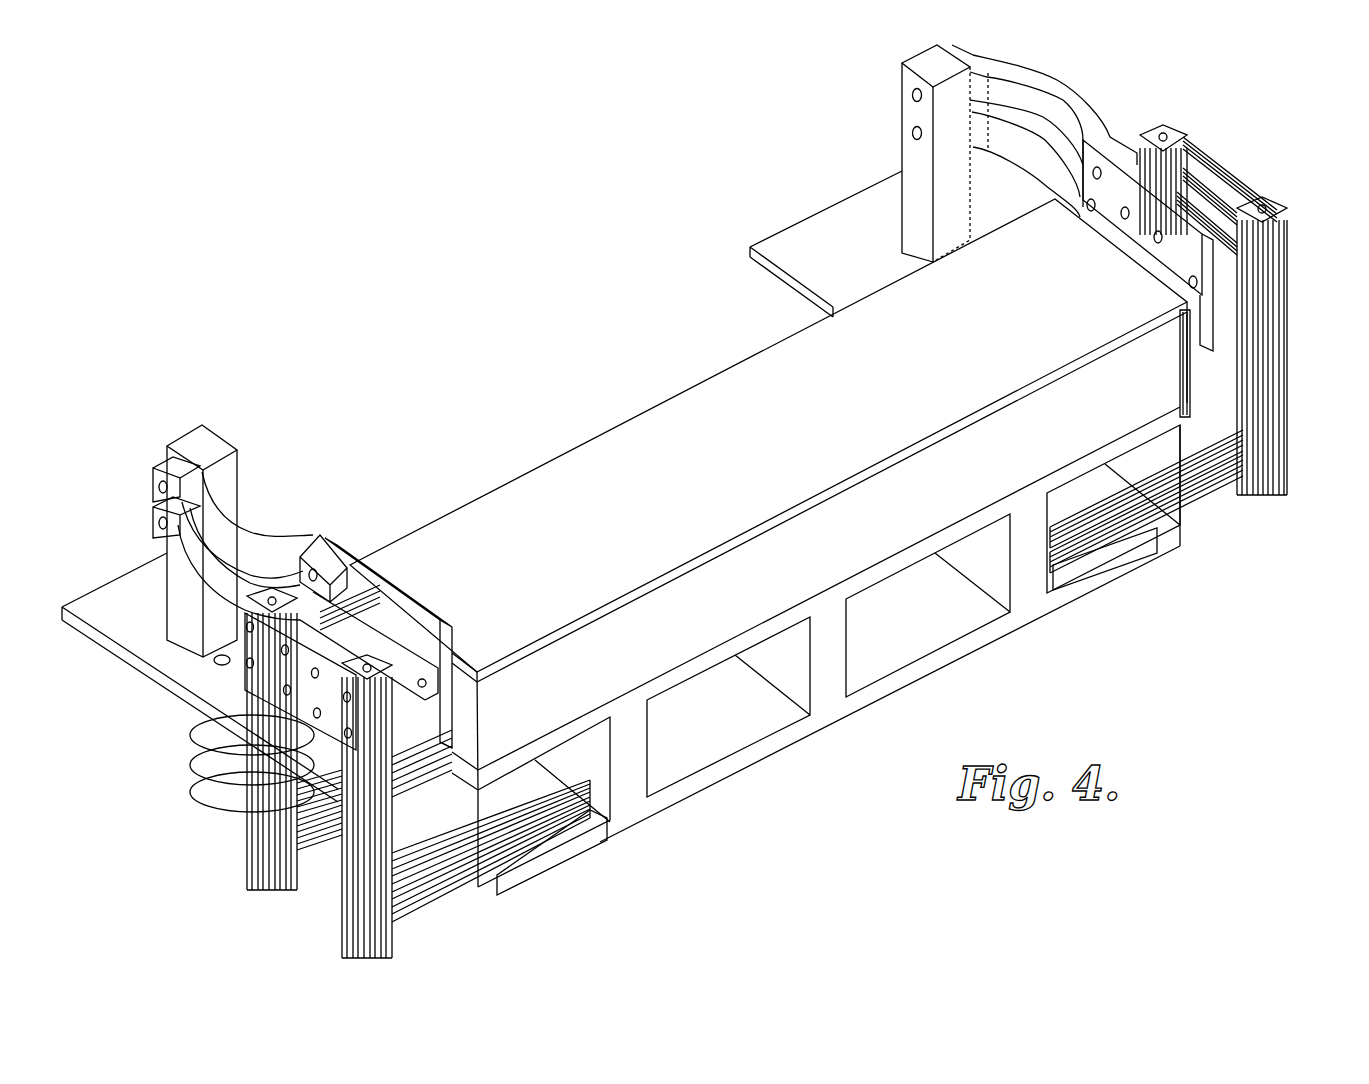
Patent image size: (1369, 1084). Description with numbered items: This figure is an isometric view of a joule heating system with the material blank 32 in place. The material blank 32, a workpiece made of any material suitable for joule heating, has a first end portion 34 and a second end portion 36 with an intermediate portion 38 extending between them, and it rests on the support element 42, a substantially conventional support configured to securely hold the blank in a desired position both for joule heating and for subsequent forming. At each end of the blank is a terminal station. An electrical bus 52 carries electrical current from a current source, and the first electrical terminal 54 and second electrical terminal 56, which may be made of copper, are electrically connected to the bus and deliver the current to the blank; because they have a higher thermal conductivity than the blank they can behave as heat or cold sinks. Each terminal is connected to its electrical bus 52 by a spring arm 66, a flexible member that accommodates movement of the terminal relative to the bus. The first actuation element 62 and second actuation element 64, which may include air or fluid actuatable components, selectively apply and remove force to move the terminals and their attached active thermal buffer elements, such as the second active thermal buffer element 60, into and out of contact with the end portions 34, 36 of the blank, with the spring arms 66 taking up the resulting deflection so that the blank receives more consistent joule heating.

The material blank 32 is at (811, 439).
The first end portion 34 is at (424, 583).
The second end portion 36 is at (1142, 315).
The intermediate portion 38 is at (624, 418).
The support element 42 is at (841, 562).
The electrical bus 52 is at (890, 108).
The first electrical terminal 54 is at (340, 532).
The second electrical terminal 56 is at (1190, 233).
The second active thermal buffer element 60 is at (1152, 256).
The first actuation element 62 is at (333, 653).
The second actuation element 64 is at (1190, 168).
The spring arm 66 is at (1090, 88).